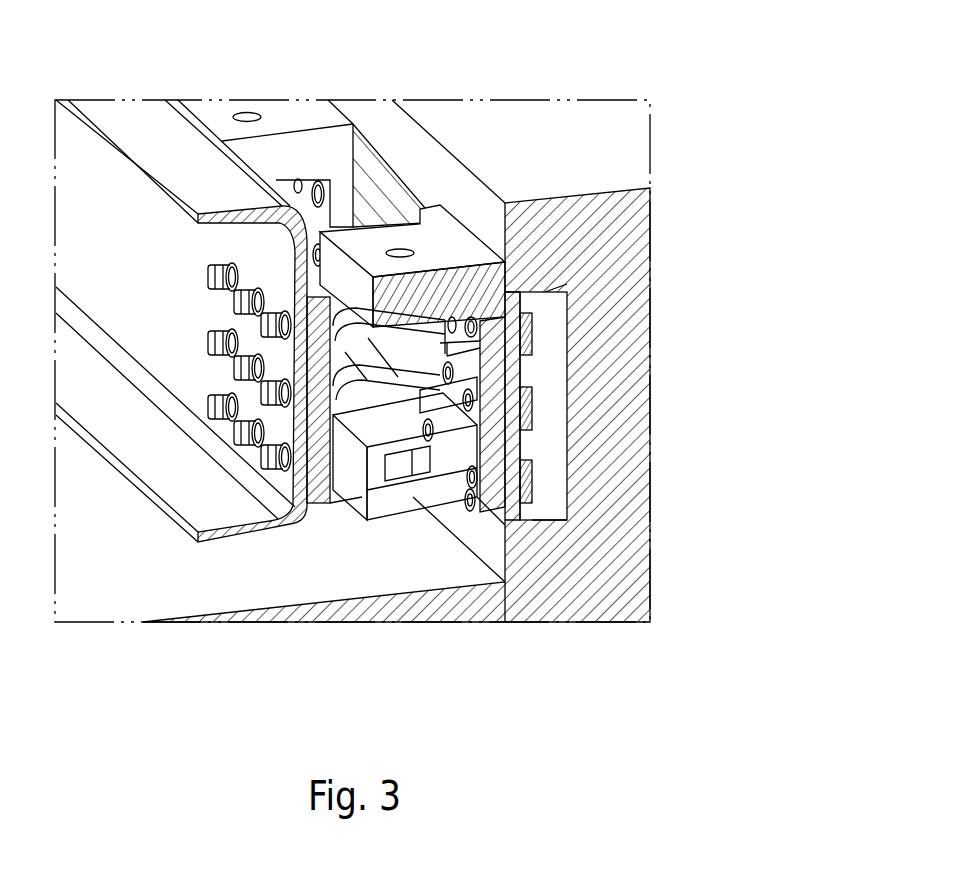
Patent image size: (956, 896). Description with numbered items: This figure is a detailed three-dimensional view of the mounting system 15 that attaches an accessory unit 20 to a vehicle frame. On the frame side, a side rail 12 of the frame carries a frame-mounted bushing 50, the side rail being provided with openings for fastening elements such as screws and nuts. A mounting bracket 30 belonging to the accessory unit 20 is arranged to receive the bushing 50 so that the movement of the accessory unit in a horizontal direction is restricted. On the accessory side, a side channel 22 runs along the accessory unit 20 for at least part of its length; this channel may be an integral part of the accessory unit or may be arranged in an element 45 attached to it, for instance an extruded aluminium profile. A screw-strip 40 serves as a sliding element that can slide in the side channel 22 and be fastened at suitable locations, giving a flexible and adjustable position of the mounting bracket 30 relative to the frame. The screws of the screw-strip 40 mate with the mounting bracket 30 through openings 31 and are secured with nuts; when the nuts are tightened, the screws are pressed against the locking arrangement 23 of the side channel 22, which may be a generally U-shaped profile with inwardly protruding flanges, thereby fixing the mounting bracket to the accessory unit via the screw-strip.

The side rail 12 is at (243, 517).
The mounting system 15 is at (482, 212).
The accessory unit 20 is at (551, 155).
The side channel 22 is at (537, 340).
The locking arrangement 23 is at (510, 497).
The mounting bracket 30 is at (470, 255).
The openings 31 is at (470, 343).
The screw-strip 40 is at (532, 495).
The element 45 is at (552, 518).
The frame-mounted bushing 50 is at (401, 355).